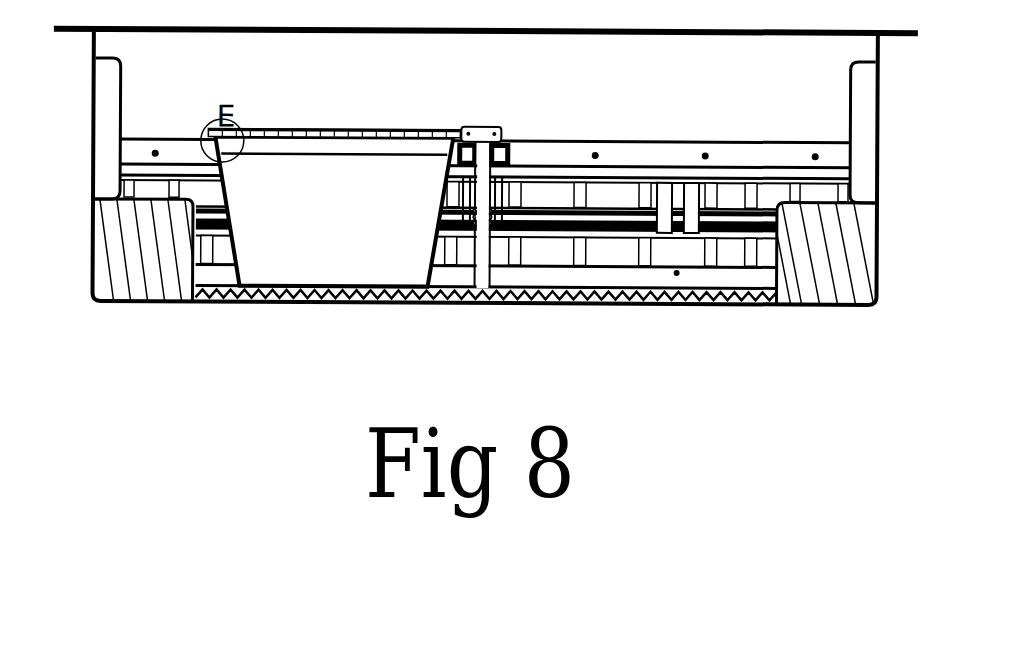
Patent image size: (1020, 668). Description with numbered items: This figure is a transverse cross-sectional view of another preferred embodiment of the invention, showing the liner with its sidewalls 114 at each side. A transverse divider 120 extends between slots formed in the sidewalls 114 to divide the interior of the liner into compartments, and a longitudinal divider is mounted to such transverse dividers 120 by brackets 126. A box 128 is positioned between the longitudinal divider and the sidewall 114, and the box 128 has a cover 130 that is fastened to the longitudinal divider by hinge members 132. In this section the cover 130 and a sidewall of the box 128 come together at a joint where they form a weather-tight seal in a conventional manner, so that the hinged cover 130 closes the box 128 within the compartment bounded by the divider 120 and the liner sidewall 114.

The sidewall 114 is at (133, 279).
The divider 120 is at (647, 152).
The bracket 126 is at (509, 143).
The box 128 is at (326, 252).
The cover 130 is at (312, 128).
The hinge member 132 is at (482, 126).